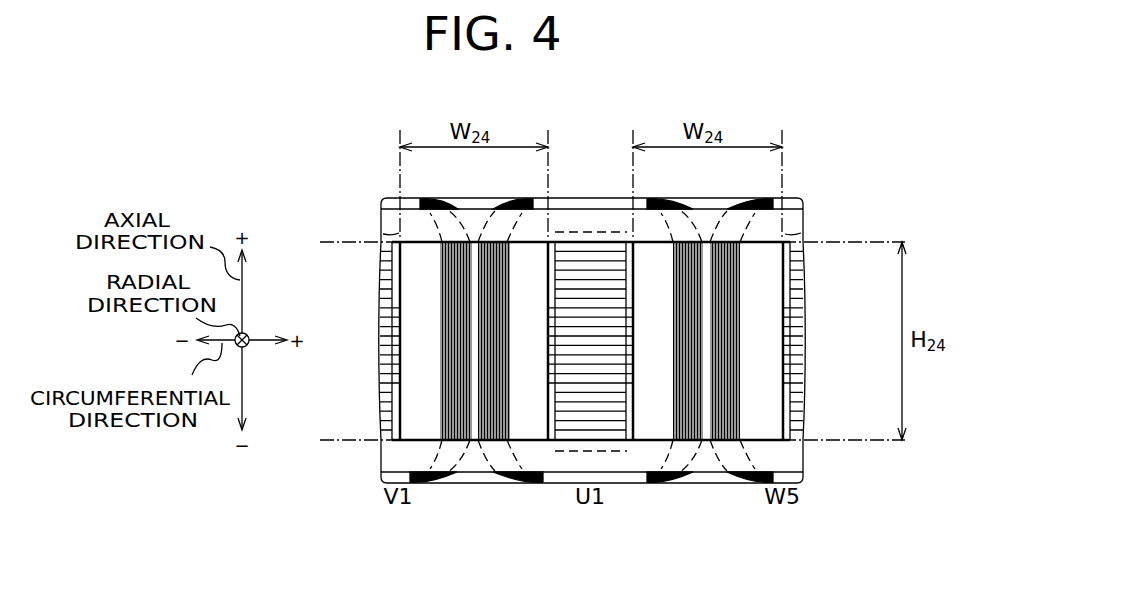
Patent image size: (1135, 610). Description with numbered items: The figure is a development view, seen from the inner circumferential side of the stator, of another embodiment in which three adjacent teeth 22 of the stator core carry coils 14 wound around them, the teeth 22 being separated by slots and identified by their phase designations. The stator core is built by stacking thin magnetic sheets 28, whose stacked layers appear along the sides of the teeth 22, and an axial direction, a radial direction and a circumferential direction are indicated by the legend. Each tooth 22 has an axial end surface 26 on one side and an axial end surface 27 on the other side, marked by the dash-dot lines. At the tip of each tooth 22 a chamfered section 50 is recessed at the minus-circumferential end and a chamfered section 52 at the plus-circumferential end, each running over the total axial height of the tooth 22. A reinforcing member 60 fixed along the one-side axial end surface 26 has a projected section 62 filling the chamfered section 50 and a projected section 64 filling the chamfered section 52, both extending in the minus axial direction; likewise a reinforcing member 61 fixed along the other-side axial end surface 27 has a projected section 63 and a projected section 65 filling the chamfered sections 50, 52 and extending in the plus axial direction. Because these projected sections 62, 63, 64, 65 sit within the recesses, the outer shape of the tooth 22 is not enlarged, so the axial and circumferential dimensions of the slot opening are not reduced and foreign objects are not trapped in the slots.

The coil 14 is at (667, 198).
The tooth 22 is at (590, 277).
The axial end surface 26 is at (335, 232).
The axial end surface 27 is at (335, 452).
The thin magnetic sheet 28 is at (381, 388).
The chamfered section 50 is at (547, 338).
The chamfered section 52 is at (401, 338).
The reinforcing member 60 is at (797, 218).
The reinforcing member 61 is at (797, 460).
The projected section 62 is at (547, 262).
The projected section 63 is at (547, 415).
The projected section 64 is at (401, 262).
The projected section 65 is at (401, 415).